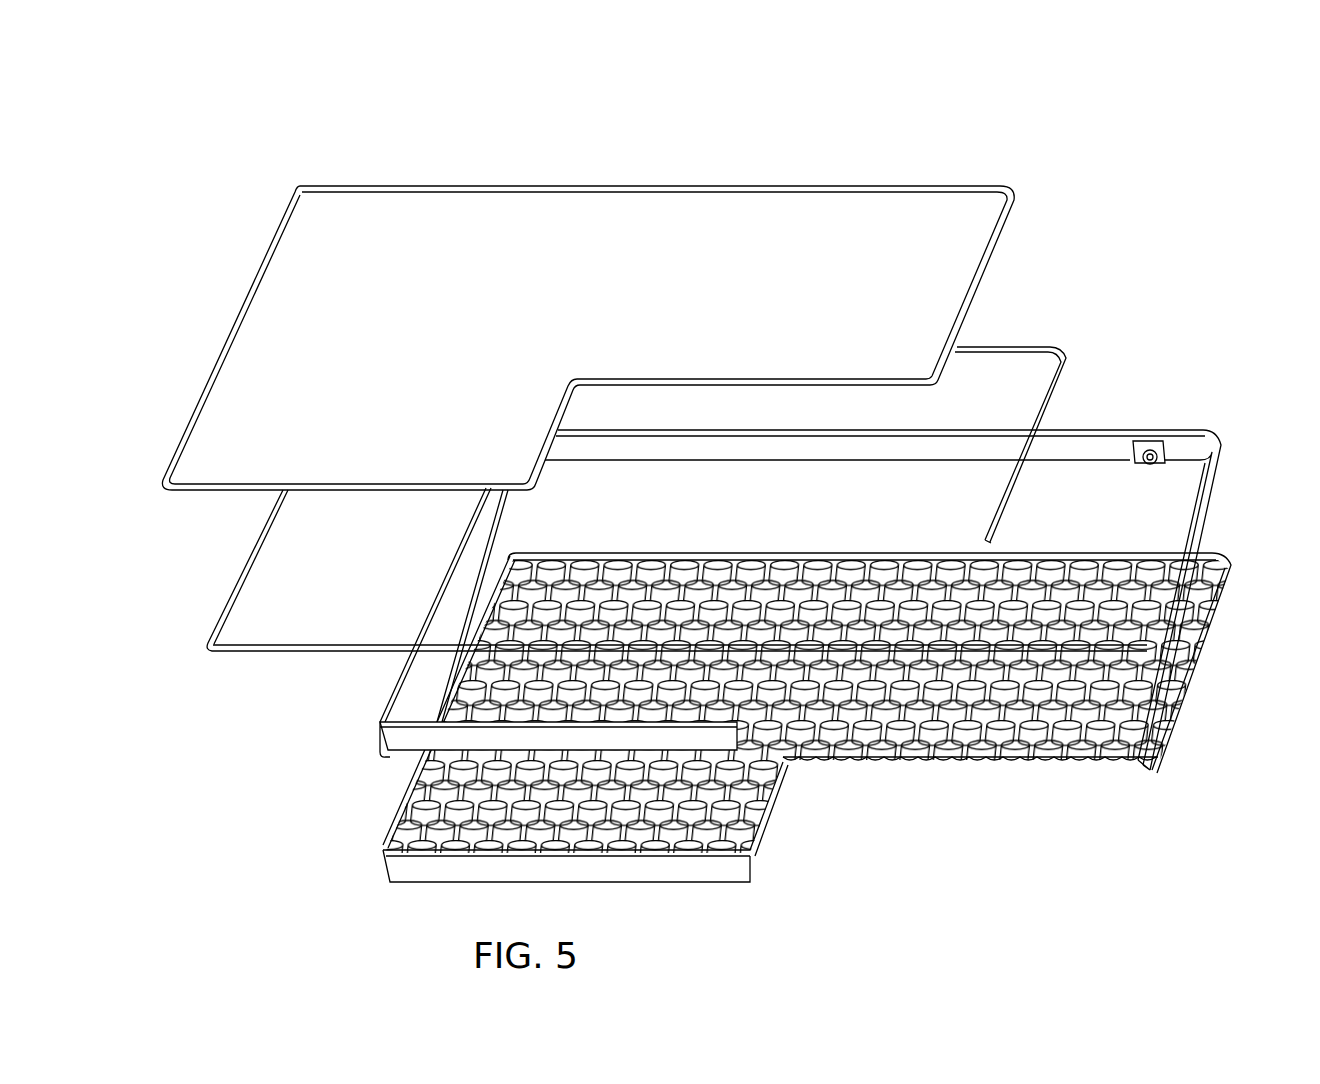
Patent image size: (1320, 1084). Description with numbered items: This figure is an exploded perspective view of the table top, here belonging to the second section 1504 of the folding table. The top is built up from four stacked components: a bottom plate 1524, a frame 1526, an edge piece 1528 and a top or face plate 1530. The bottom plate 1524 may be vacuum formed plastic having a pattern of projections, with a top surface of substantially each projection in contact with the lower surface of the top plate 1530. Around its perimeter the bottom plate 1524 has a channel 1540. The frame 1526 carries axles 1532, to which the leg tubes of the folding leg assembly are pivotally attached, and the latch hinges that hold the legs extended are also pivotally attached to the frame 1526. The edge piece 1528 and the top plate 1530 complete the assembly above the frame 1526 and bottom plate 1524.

The second section 1504 is at (779, 136).
The bottom plate 1524 is at (770, 813).
The frame 1526 is at (776, 616).
The edge piece 1528 is at (248, 655).
The top plate 1530 is at (432, 222).
The axle 1532 is at (1150, 448).
The channel 1540 is at (1141, 784).